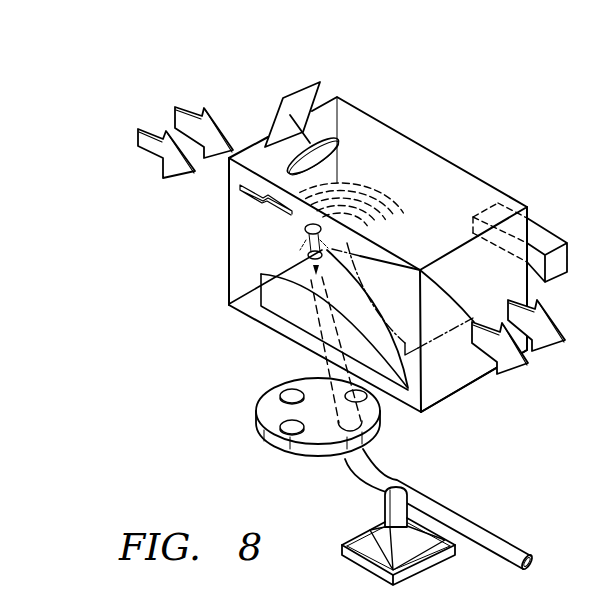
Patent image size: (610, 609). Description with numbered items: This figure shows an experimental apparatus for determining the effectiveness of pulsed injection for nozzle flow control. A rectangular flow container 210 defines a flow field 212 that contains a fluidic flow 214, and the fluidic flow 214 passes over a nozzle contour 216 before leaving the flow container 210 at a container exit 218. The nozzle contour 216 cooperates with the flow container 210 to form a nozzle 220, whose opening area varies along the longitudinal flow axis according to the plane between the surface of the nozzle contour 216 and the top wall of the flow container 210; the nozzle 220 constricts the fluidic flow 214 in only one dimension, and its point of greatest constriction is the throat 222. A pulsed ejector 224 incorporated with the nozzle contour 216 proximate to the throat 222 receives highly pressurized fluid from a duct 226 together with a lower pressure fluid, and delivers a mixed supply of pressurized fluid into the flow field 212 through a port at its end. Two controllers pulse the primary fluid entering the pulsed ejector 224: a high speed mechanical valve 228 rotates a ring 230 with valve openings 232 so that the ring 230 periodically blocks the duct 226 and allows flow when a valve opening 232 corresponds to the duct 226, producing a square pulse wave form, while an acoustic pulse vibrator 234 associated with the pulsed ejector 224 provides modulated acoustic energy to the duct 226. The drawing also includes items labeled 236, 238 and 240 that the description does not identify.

The flow container 210 is at (438, 142).
The flow field 212 is at (265, 212).
The fluidic flow 214 is at (147, 152).
The nozzle contour 216 is at (435, 354).
The container exit 218 is at (435, 407).
The nozzle 220 is at (208, 204).
The throat 222 is at (286, 288).
The pulsed ejector 224 is at (306, 260).
The duct 226 is at (502, 538).
The high speed mechanical valve 228 is at (268, 405).
The ring 230 is at (216, 408).
The valve openings 232 is at (306, 443).
The acoustic pulse vibrator 234 is at (357, 567).
The connector bar 236 is at (548, 243).
The vane 238 is at (282, 103).
The lens opening 240 is at (333, 160).